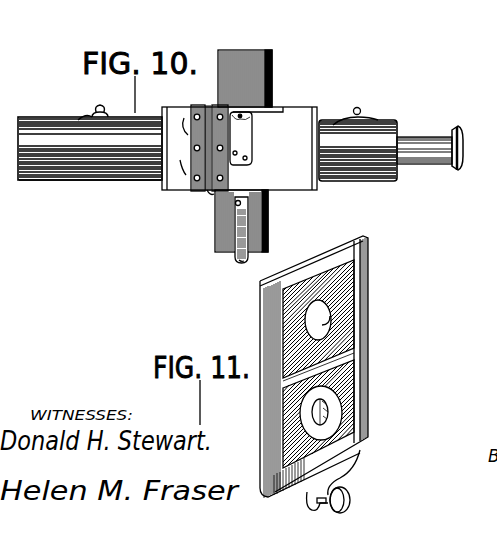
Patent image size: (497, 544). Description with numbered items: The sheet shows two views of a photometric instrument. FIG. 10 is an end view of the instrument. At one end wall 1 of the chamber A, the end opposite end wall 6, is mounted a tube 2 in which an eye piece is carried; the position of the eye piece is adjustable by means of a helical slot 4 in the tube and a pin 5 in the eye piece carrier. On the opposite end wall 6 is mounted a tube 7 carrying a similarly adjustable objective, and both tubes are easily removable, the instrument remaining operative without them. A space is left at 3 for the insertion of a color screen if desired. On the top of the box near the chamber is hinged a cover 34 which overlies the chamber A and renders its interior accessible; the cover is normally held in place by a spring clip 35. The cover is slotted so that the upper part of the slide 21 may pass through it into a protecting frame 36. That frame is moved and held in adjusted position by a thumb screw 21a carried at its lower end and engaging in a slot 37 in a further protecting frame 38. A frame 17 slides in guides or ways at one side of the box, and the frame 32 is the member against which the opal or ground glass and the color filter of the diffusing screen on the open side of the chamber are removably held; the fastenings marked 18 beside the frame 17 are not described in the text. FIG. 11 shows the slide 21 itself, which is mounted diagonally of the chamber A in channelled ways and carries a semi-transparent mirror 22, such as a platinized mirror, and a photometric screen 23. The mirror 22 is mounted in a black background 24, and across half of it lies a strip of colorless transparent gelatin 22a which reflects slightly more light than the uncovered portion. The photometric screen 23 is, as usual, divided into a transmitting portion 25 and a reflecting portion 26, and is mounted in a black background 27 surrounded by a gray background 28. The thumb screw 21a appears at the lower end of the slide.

In FIG. 10, the tube 1 is at (323, 120).
In FIG. 10, the tube 2 is at (382, 133).
In FIG. 10, the space for color screen 3 is at (315, 158).
In FIG. 10, the helical slot 4 is at (355, 114).
In FIG. 10, the pin 5 is at (362, 112).
In FIG. 10, the opposite end wall 6 is at (171, 108).
In FIG. 10, the tube 7 is at (68, 133).
In FIG. 10, the frame 17 is at (211, 192).
In FIG. 10, the screws 18 is at (195, 148).
In FIG. 11, the slide 21 is at (351, 255).
In FIG. 10, the thumb screw 21a is at (236, 206).
In FIG. 11, the thumb screw 21a is at (351, 498).
In FIG. 11, the semi-transparent mirror 22 is at (352, 304).
In FIG. 11, the strip of colorless transparent gelatin 22a is at (308, 316).
In FIG. 11, the photometric screen 23 is at (323, 422).
In FIG. 11, the black background 24 is at (350, 283).
In FIG. 11, the transmitting portion 25 is at (352, 405).
In FIG. 11, the reflecting portion 26 is at (323, 407).
In FIG. 11, the black background 27 is at (350, 389).
In FIG. 11, the gray background 28 is at (352, 371).
In FIG. 10, the frame 32 is at (234, 257).
In FIG. 10, the cover 34 is at (282, 118).
In FIG. 10, the spring clip 35 is at (243, 138).
In FIG. 10, the protecting frame 36 is at (233, 48).
In FIG. 10, the slot 37 is at (238, 264).
In FIG. 10, the protecting frame 38 is at (268, 239).
In FIG. 10, the chamber A is at (310, 108).